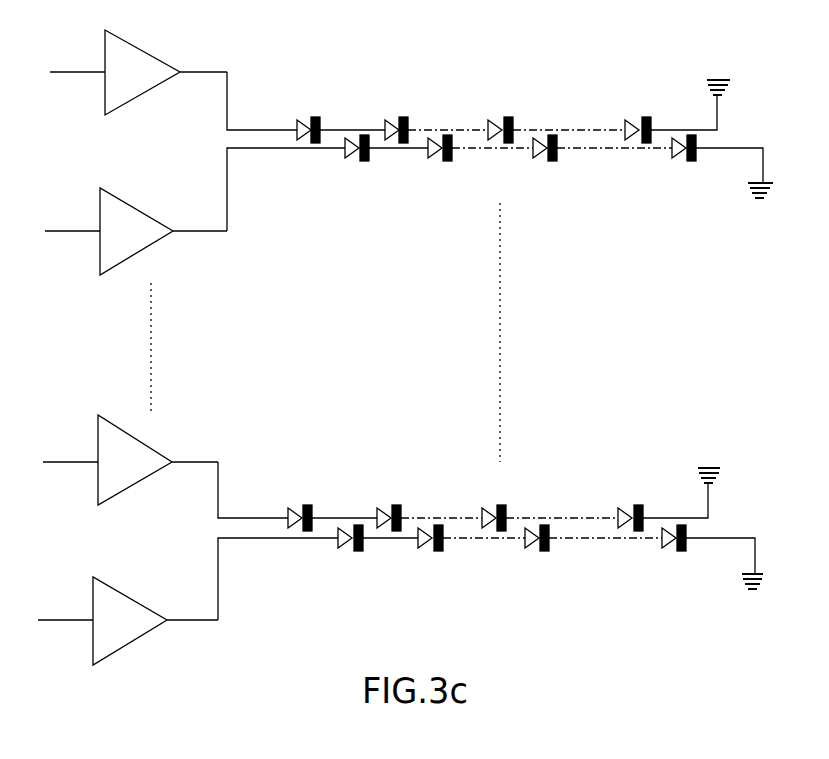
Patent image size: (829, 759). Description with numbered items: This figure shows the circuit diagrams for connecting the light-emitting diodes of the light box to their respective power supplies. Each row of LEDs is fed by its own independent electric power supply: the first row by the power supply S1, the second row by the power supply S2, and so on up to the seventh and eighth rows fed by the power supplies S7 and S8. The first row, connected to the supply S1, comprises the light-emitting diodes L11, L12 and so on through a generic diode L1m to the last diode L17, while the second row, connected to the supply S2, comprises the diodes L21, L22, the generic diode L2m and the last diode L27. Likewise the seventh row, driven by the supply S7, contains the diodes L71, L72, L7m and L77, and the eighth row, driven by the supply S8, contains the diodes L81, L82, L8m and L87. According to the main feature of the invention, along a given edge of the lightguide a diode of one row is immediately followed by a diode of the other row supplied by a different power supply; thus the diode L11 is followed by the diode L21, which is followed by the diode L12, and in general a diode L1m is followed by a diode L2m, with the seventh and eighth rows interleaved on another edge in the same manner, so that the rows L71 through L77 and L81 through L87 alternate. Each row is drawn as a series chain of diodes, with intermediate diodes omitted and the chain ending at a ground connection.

The power supply S1 is at (135, 43).
The power supply S2 is at (128, 203).
The power supply S7 is at (142, 443).
The power supply S8 is at (120, 590).
The light-emitting diode L11 is at (300, 122).
The light-emitting diode L12 is at (393, 122).
The light-emitting diode L1m is at (490, 117).
The light-emitting diode L17 is at (632, 117).
The light-emitting diode L21 is at (350, 162).
The light-emitting diode L22 is at (433, 162).
The light-emitting diode L2m is at (540, 158).
The light-emitting diode L27 is at (678, 160).
The light-emitting diode L71 is at (292, 510).
The light-emitting diode L72 is at (383, 510).
The light-emitting diode L7m is at (482, 508).
The light-emitting diode L77 is at (617, 508).
The light-emitting diode L81 is at (343, 550).
The light-emitting diode L82 is at (423, 550).
The light-emitting diode L8m is at (537, 550).
The light-emitting diode L87 is at (667, 550).